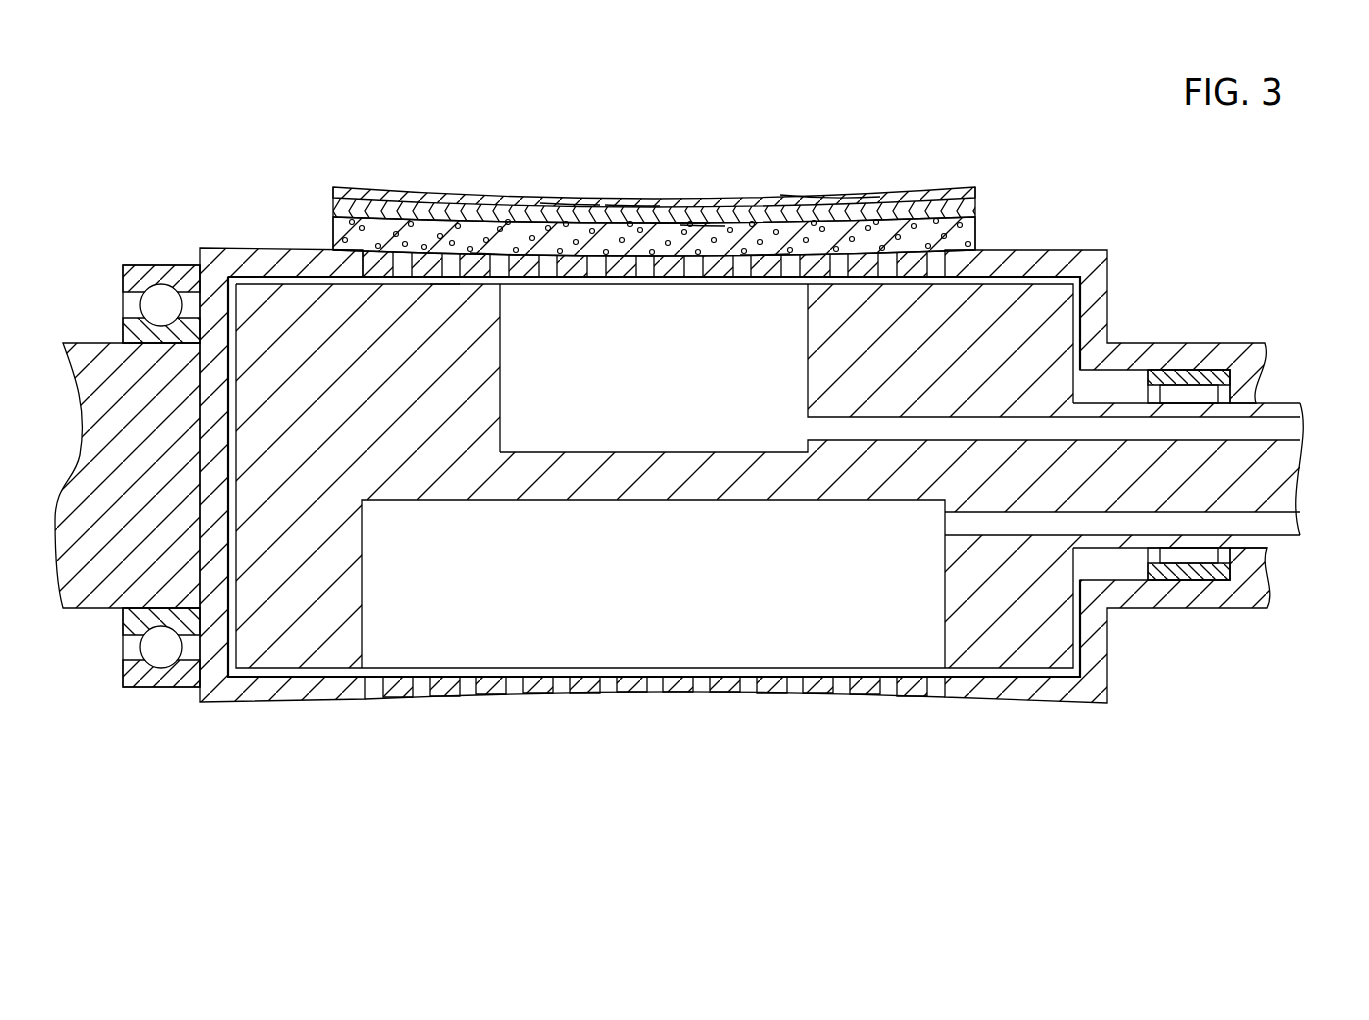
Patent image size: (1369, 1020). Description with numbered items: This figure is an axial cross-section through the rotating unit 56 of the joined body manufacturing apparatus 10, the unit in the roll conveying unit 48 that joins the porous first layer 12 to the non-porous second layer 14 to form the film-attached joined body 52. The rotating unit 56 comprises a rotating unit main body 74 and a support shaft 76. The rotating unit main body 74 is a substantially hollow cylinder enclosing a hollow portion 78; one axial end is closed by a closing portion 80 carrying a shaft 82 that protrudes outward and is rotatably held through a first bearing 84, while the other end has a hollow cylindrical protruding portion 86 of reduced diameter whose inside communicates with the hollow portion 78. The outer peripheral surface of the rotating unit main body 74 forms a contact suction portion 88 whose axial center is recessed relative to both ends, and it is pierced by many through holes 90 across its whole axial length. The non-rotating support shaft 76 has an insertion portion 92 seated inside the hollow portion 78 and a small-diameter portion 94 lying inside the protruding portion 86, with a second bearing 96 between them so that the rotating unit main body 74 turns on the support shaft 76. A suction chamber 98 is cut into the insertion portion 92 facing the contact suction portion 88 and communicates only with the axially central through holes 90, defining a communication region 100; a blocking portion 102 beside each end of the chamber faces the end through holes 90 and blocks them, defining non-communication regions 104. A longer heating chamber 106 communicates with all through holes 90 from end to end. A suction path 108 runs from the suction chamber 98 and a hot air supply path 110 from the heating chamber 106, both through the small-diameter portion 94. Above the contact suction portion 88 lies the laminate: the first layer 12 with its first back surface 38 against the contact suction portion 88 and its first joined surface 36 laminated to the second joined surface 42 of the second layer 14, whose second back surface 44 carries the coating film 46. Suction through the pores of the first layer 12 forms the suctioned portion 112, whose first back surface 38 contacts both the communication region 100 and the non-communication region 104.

The joined body manufacturing apparatus 10 is at (139, 133).
The first layer 12 is at (703, 242).
The second layer 14 is at (672, 217).
The first joined surface 36 is at (591, 222).
The first back surface 38 is at (699, 265).
The second joined surface 42 is at (609, 258).
The second back surface 44 is at (571, 202).
The coating film 46 is at (625, 200).
The roll conveying unit 48 is at (283, 192).
The film-attached joined body 52 is at (929, 190).
The rotating unit 56 is at (313, 710).
The rotating unit main body 74 is at (1023, 695).
The support shaft 76 is at (990, 645).
The hollow portion 78 is at (262, 668).
The closing portion 80 is at (217, 652).
The shaft 82 is at (90, 350).
The first bearing 84 is at (162, 265).
The protruding portion 86 is at (1158, 343).
The contact suction portion 88 is at (495, 252).
The through holes 90 is at (654, 273).
The insertion portion 92 is at (343, 593).
The small-diameter portion 94 is at (1243, 542).
The second bearing 96 is at (1187, 378).
The suction chamber 98 is at (531, 308).
The communication region 100 is at (766, 253).
The blocking portion 102 is at (443, 288).
The non-communication region 104 is at (400, 248).
The heating chamber 106 is at (658, 652).
The suction path 108 is at (1280, 430).
The hot air supply path 110 is at (1273, 525).
The suctioned portion 112 is at (831, 192).